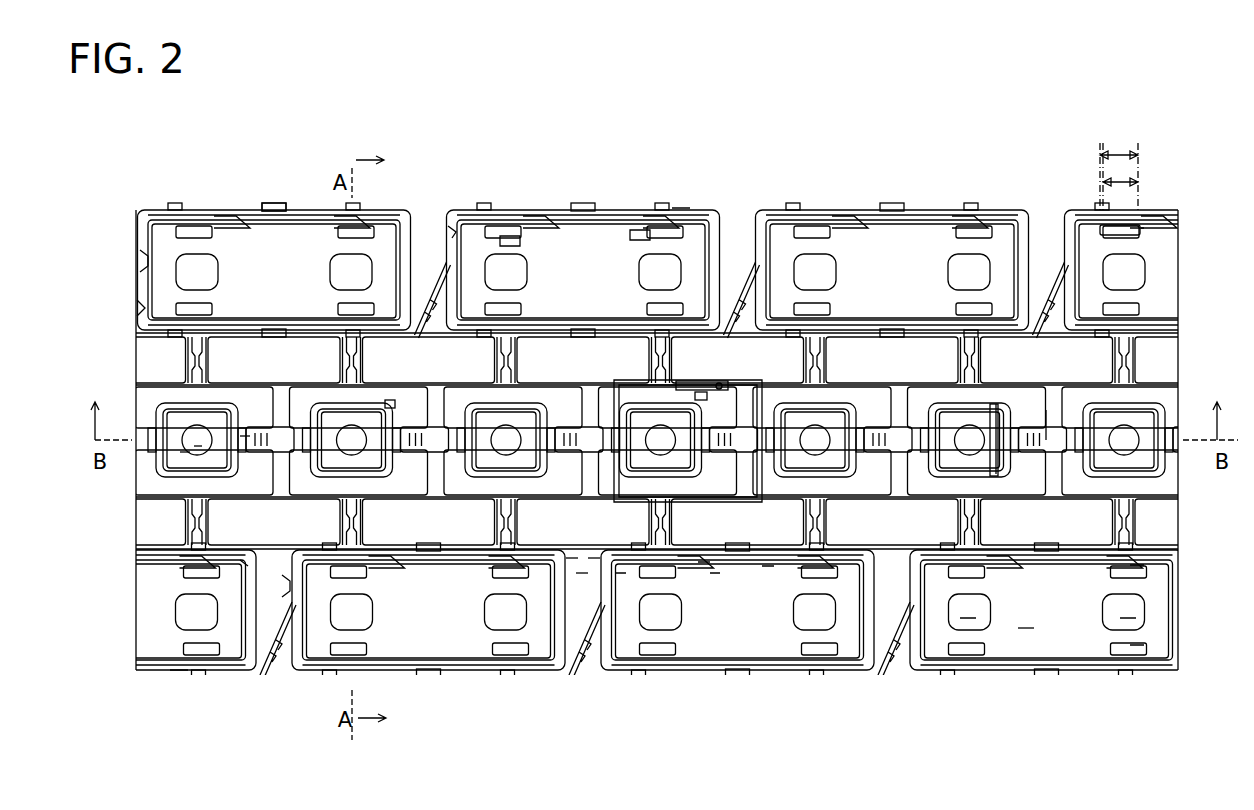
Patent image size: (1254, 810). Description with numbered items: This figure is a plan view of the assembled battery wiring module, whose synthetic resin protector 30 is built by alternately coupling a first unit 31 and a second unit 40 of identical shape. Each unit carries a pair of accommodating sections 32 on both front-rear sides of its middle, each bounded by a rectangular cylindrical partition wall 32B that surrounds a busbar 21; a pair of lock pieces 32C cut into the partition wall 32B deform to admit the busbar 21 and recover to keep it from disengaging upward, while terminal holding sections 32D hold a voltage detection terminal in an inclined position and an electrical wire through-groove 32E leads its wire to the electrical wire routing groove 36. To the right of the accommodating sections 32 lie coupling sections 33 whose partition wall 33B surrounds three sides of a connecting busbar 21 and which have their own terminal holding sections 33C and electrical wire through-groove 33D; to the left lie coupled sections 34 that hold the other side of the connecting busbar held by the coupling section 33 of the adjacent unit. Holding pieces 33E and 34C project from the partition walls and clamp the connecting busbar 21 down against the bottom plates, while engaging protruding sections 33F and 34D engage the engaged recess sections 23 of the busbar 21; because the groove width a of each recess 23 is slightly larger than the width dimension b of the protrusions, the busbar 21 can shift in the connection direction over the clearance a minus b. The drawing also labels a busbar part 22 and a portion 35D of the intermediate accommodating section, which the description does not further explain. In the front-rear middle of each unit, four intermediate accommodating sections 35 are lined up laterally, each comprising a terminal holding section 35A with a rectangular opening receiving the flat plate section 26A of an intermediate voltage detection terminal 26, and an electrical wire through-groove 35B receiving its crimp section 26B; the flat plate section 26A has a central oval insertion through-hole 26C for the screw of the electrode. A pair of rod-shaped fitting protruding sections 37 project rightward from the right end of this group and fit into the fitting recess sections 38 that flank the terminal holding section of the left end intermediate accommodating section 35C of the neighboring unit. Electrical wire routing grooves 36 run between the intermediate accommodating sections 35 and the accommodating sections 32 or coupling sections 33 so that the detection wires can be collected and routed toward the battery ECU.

The busbar 21 is at (1026, 632).
The electrode terminal 22 is at (968, 622).
The engaged recess section 23 is at (1140, 233).
The intermediate voltage detection terminal 26 is at (1140, 420).
The flat plate section 26A is at (185, 455).
The crimp section 26B is at (245, 440).
The insertion through-hole 26C is at (198, 450).
The protector 30 is at (673, 135).
The first unit 31 is at (429, 178).
The accommodating section 32 is at (182, 196).
The partition wall 32B is at (390, 402).
The lock piece 32C is at (270, 316).
The terminal holding section 32D is at (175, 322).
The electrical wire through-groove 32E is at (137, 308).
The coupling section 33 is at (493, 196).
The partition wall 33B is at (594, 562).
The terminal holding section 33C is at (572, 562).
The electrical wire through-groove 33D is at (582, 577).
The holding piece 33E is at (633, 562).
The engaging protruding section 33F is at (512, 240).
The coupled section 34 is at (686, 196).
The holding piece 34C is at (767, 572).
The engaging protruding section 34D is at (640, 238).
The intermediate accommodating section 35 is at (985, 111).
The terminal holding section 35A is at (999, 405).
The electrical wire through-groove 35B is at (1048, 415).
The left end intermediate accommodating section 35C is at (702, 395).
The partition wall connecting portion 35D is at (452, 232).
The electrical wire routing groove 36 is at (1160, 357).
The fitting protruding section 37 is at (690, 378).
The fitting recess section 38 is at (716, 398).
The second unit 40 is at (929, 149).
The groove width a is at (1118, 153).
The width dimension b is at (1128, 180).